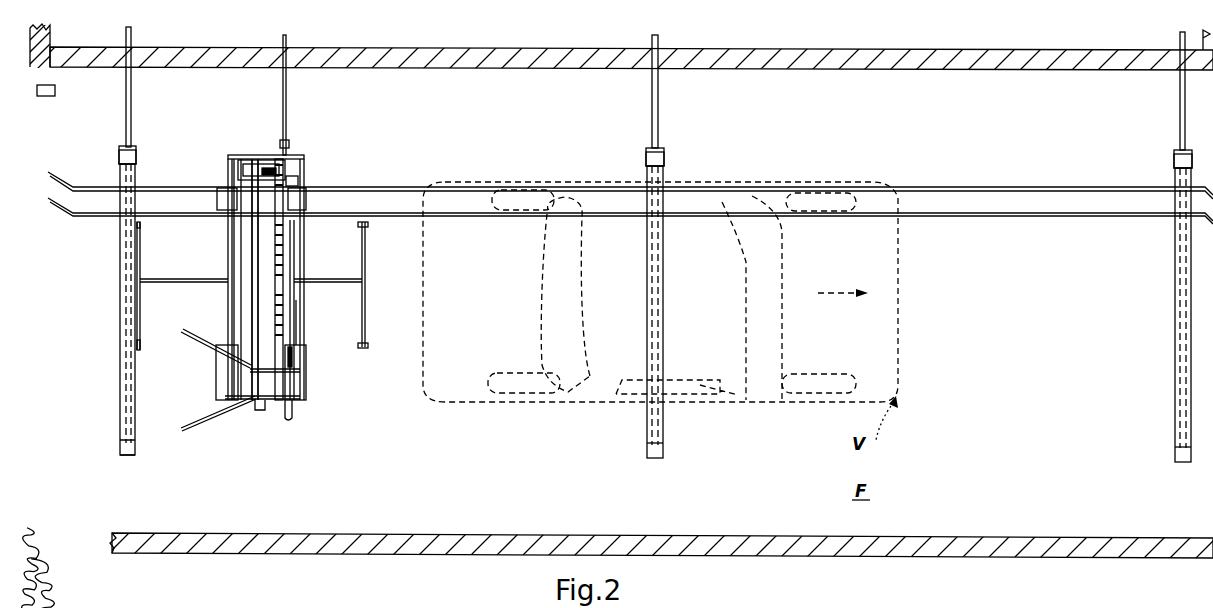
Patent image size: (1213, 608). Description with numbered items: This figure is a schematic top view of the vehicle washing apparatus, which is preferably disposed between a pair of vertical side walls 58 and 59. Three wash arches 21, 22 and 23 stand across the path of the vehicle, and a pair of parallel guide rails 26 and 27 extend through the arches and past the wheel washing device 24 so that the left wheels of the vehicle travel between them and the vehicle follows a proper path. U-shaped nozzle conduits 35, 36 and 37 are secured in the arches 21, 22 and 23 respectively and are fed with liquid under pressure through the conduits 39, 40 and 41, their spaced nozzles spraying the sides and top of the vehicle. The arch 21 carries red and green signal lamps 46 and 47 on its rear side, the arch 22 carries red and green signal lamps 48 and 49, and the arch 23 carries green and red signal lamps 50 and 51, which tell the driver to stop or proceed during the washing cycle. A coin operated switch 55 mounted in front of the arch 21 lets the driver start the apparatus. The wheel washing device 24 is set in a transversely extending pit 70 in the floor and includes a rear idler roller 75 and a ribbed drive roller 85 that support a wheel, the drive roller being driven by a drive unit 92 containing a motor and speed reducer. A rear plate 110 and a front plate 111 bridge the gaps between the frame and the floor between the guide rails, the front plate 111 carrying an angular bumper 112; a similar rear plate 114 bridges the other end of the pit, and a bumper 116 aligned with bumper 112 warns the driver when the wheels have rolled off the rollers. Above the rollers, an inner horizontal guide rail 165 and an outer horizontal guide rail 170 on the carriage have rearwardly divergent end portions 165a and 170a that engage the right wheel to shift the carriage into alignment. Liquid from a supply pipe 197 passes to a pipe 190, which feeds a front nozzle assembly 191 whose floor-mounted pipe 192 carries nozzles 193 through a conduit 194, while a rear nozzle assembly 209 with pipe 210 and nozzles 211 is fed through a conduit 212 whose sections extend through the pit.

The wash arch 21 is at (140, 456).
The wash arch 22 is at (648, 457).
The wash arch 23 is at (1174, 458).
The wheel washing device 24 is at (254, 410).
The guide rail 26 is at (976, 187).
The guide rail 27 is at (972, 218).
The nozzle conduit 35 is at (119, 374).
The nozzle conduit 36 is at (646, 424).
The nozzle conduit 37 is at (1175, 414).
The conduit 39 is at (132, 103).
The conduit 40 is at (659, 112).
The conduit 41 is at (1180, 98).
The red signal lamp 46 is at (119, 152).
The green signal lamp 47 is at (119, 158).
The red signal lamp 48 is at (646, 152).
The green signal lamp 49 is at (646, 159).
The green signal lamp 50 is at (1174, 155).
The red signal lamp 51 is at (1174, 160).
The coin operated switch 55 is at (58, 90).
The vertical side wall 58 is at (398, 78).
The vertical side wall 59 is at (1046, 560).
The pit 70 is at (290, 328).
The rear idler roller 75 is at (258, 238).
The drive roller 85 is at (284, 250).
The drive unit 92 is at (262, 162).
The rear plate 110 is at (216, 199).
The front plate 111 is at (306, 200).
The bumper 112 is at (298, 180).
The rear plate 114 is at (216, 376).
The bumper 116 is at (300, 352).
The inner horizontal guide rail 165 is at (298, 365).
The rearwardly divergent end portion 165a is at (212, 338).
The outer horizontal guide rail 170 is at (298, 395).
The rearwardly divergent end portion 170a is at (216, 413).
The pipe 190 is at (295, 228).
The front nozzle assembly 191 is at (370, 283).
The pipe 192 is at (366, 318).
The nozzles 193 is at (362, 246).
The conduit 194 is at (300, 286).
The liquid supply pipe 197 is at (287, 106).
The rear nozzle assembly 209 is at (150, 270).
The pipe 210 is at (146, 240).
The nozzles 211 is at (140, 318).
The conduit 212 is at (206, 268).